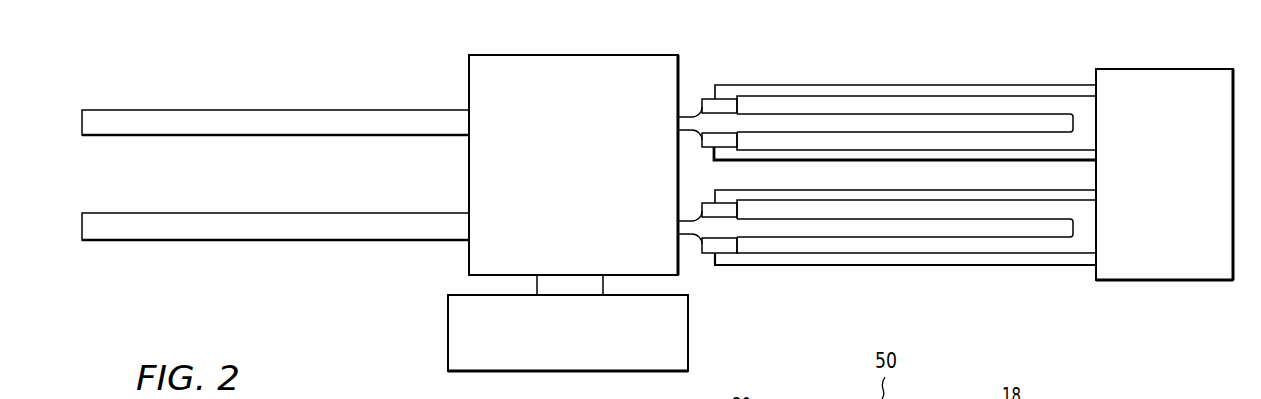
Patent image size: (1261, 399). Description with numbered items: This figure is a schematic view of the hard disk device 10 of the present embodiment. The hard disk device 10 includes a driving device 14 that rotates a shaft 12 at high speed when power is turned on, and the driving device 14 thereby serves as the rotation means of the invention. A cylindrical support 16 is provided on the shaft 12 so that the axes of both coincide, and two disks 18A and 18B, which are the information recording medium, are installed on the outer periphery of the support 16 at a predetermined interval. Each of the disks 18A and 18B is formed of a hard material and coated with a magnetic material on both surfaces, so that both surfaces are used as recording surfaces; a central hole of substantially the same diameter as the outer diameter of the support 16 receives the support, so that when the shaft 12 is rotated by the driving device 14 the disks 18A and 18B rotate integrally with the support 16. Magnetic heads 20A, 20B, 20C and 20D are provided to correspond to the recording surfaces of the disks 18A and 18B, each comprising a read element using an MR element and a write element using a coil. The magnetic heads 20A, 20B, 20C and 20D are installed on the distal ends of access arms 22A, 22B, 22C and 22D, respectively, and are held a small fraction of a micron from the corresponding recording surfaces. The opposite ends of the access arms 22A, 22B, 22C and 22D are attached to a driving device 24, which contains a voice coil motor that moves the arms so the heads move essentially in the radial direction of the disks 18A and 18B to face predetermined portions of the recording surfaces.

The hard disk device 10 is at (92, 82).
The shaft 12 is at (537, 287).
The driving device 14 is at (584, 350).
The cylindrical support 16 is at (536, 105).
The disk 18A is at (82, 125).
The disk 18B is at (82, 231).
The magnetic head 20A is at (702, 101).
The magnetic head 20B is at (702, 142).
The magnetic head 20C is at (701, 207).
The magnetic head 20D is at (701, 247).
The access arm 22A is at (776, 85).
The access arm 22B is at (806, 162).
The access arm 22C is at (859, 188).
The access arm 22D is at (777, 266).
The driving device 24 is at (1179, 258).